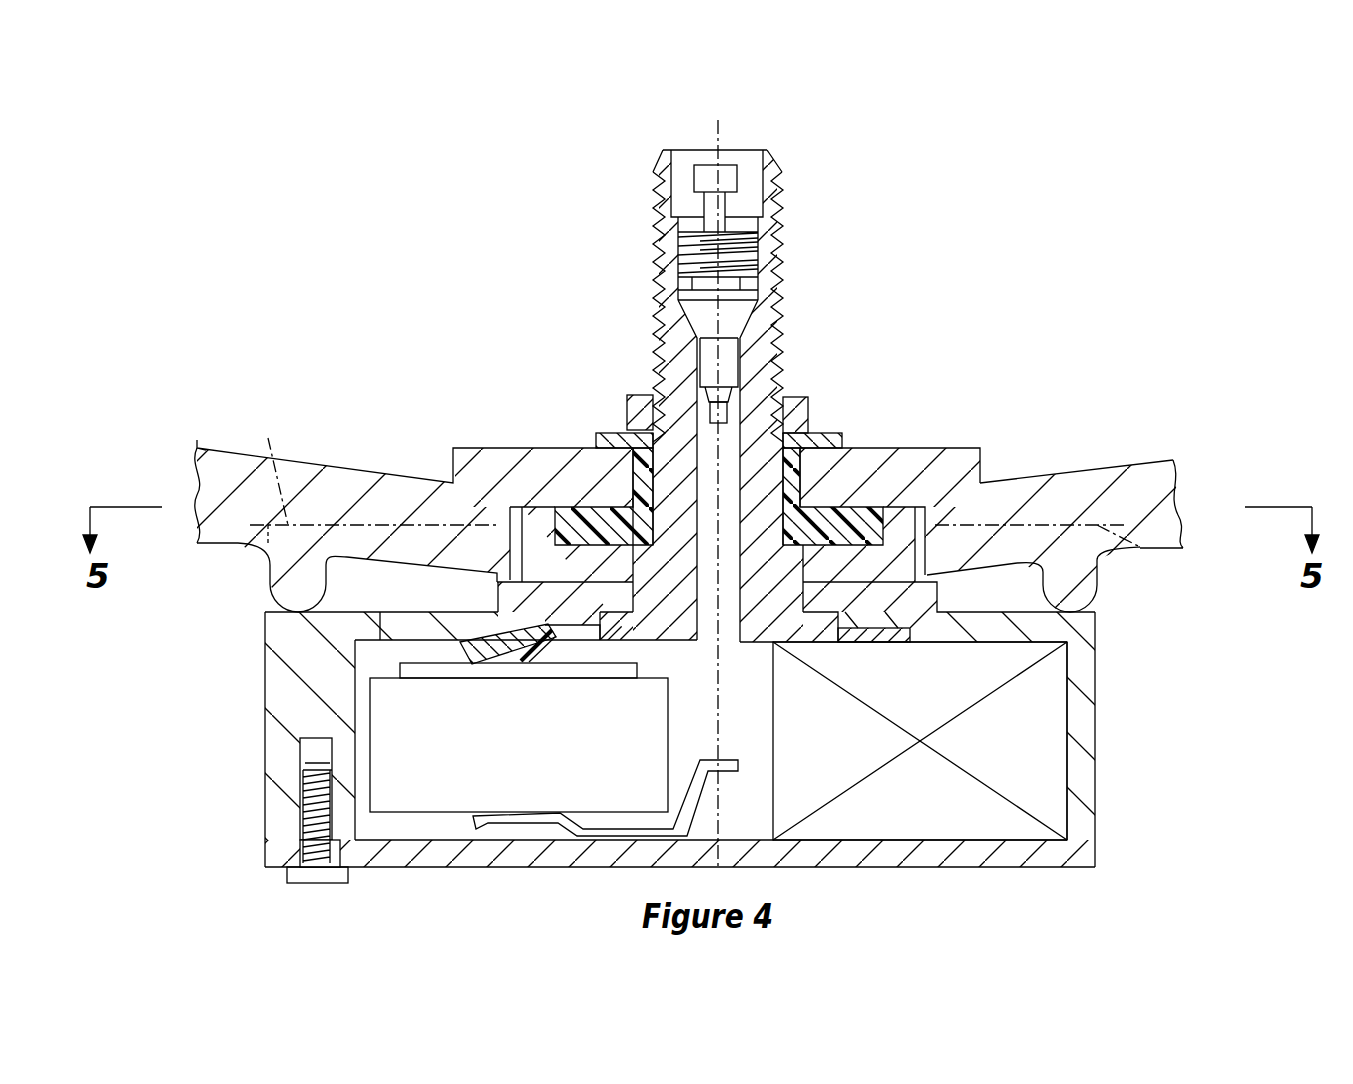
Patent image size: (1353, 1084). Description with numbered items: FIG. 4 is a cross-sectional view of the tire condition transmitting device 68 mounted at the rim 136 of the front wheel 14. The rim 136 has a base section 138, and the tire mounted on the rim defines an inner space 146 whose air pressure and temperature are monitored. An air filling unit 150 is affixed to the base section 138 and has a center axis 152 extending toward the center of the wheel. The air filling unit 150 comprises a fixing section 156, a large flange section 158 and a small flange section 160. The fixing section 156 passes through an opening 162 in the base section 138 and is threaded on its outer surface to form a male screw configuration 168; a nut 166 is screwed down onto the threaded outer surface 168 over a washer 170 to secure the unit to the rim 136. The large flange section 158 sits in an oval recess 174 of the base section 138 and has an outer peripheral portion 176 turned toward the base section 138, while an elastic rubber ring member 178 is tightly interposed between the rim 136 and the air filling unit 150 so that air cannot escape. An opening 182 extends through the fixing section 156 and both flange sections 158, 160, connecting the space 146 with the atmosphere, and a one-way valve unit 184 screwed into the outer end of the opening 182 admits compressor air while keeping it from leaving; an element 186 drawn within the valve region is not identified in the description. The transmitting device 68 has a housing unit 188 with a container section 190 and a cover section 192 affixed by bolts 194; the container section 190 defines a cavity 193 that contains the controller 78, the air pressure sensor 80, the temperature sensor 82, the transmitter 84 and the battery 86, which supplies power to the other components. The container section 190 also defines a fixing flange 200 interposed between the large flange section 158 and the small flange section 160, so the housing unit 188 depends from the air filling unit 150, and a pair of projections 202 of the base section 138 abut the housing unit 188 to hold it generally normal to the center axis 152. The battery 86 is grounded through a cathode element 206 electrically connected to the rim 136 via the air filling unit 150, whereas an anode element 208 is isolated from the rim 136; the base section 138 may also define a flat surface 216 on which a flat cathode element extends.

The front wheel 14 is at (1226, 385).
The transmitting device 68 is at (750, 754).
The controller 78 is at (1019, 741).
The air pressure sensor 80 is at (920, 741).
The temperature sensor 82 is at (920, 741).
The transmitter 84 is at (1057, 713).
The battery 86 is at (383, 713).
The rim 136 is at (1127, 455).
The base section 138 is at (1040, 488).
The inner space 146 is at (455, 897).
The air filling unit 150 is at (604, 250).
The center axis 152 is at (715, 128).
The fixing section 156 is at (795, 296).
The large flange section 158 is at (588, 560).
The small flange section 160 is at (817, 630).
The opening 162 is at (800, 470).
The nut 166 is at (630, 412).
The threaded outer surface 168 is at (725, 396).
The washer 170 is at (826, 428).
The oval recess 174 is at (457, 448).
The outer peripheral portion 176 is at (537, 507).
The elastic ring member 178 is at (917, 468).
The opening 182 is at (732, 635).
The one-way valve unit 184 is at (737, 181).
The spring 186 is at (756, 258).
The housing unit 188 is at (1098, 660).
The container section 190 is at (1130, 739).
The cover section 192 is at (725, 868).
The cavity 193 is at (432, 834).
The bolts 194 is at (300, 806).
The fixing flange 200 is at (607, 600).
The projections 202 is at (280, 574).
The cathode element 206 is at (520, 664).
The anode element 208 is at (685, 792).
The flat surface 216 is at (270, 473).